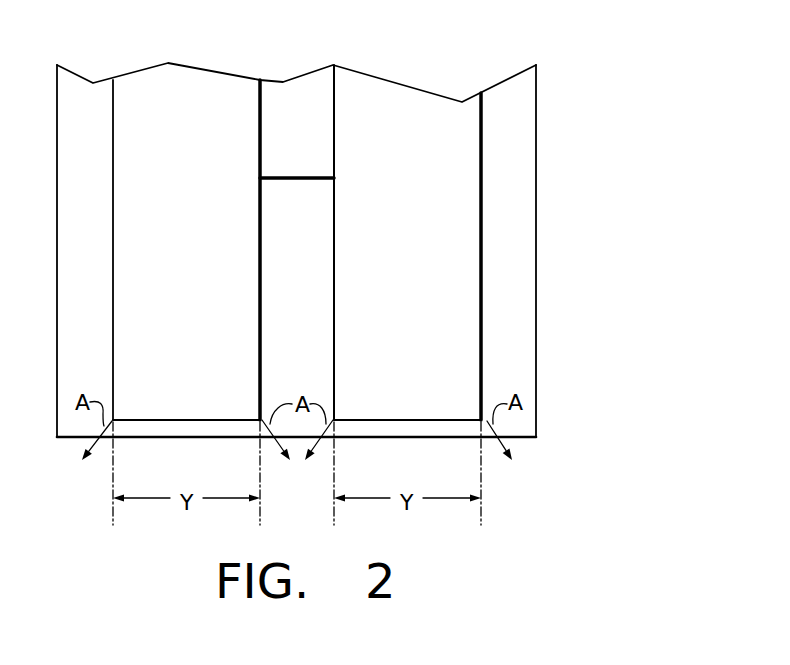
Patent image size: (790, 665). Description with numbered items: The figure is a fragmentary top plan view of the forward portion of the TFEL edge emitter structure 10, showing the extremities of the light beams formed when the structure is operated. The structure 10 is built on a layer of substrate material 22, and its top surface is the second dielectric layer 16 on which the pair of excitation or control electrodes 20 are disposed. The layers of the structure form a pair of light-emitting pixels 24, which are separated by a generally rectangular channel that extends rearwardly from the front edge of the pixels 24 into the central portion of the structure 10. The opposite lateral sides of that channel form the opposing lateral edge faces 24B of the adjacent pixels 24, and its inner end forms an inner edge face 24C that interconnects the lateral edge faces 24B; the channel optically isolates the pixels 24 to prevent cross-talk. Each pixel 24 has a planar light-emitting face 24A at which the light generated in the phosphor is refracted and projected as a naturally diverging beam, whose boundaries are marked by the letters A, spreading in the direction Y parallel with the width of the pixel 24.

The TFEL edge emitter structure 10 is at (612, 136).
The second dielectric layer 16 is at (300, 100).
The control electrodes 20 is at (212, 96).
The substrate material layer 22 is at (515, 295).
The light-emitting pixels 24 is at (149, 91).
The light-emitting face 24A is at (207, 420).
The lateral edge faces 24B is at (262, 290).
The inner edge face 24C is at (297, 180).